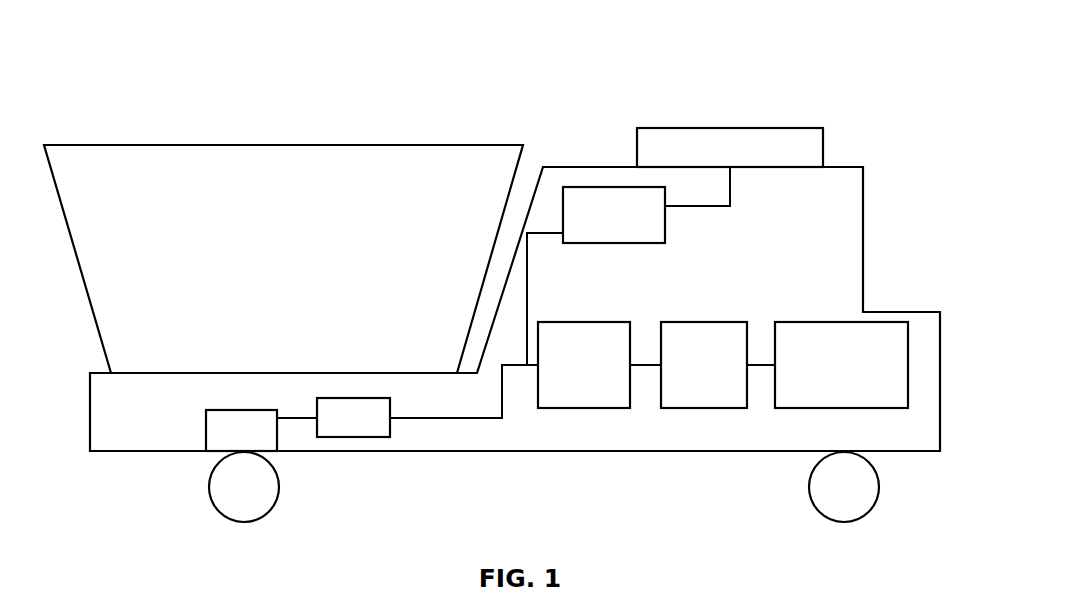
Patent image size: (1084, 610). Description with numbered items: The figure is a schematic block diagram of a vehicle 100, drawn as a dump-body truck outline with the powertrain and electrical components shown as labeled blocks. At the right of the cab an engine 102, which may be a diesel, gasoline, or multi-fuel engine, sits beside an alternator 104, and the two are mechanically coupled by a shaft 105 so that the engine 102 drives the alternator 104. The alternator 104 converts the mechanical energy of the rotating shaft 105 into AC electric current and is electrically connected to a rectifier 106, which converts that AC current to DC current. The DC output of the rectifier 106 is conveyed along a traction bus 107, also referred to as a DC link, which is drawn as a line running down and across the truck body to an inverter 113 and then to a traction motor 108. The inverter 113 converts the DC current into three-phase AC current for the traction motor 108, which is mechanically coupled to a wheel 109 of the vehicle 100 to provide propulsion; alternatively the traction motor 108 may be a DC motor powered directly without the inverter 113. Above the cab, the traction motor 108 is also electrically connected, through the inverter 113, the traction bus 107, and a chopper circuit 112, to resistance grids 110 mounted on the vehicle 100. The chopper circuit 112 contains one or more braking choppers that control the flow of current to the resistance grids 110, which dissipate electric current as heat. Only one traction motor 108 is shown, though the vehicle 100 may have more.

The vehicle 100 is at (481, 78).
The engine 102 is at (840, 322).
The alternator 104 is at (703, 322).
The shaft 105 is at (768, 365).
The rectifier 106 is at (578, 322).
The traction bus 107 is at (502, 418).
The traction motor 108 is at (206, 432).
The wheel 109 is at (279, 487).
The resistance grids 110 is at (733, 128).
The chopper circuit 112 is at (612, 187).
The inverter 113 is at (390, 428).